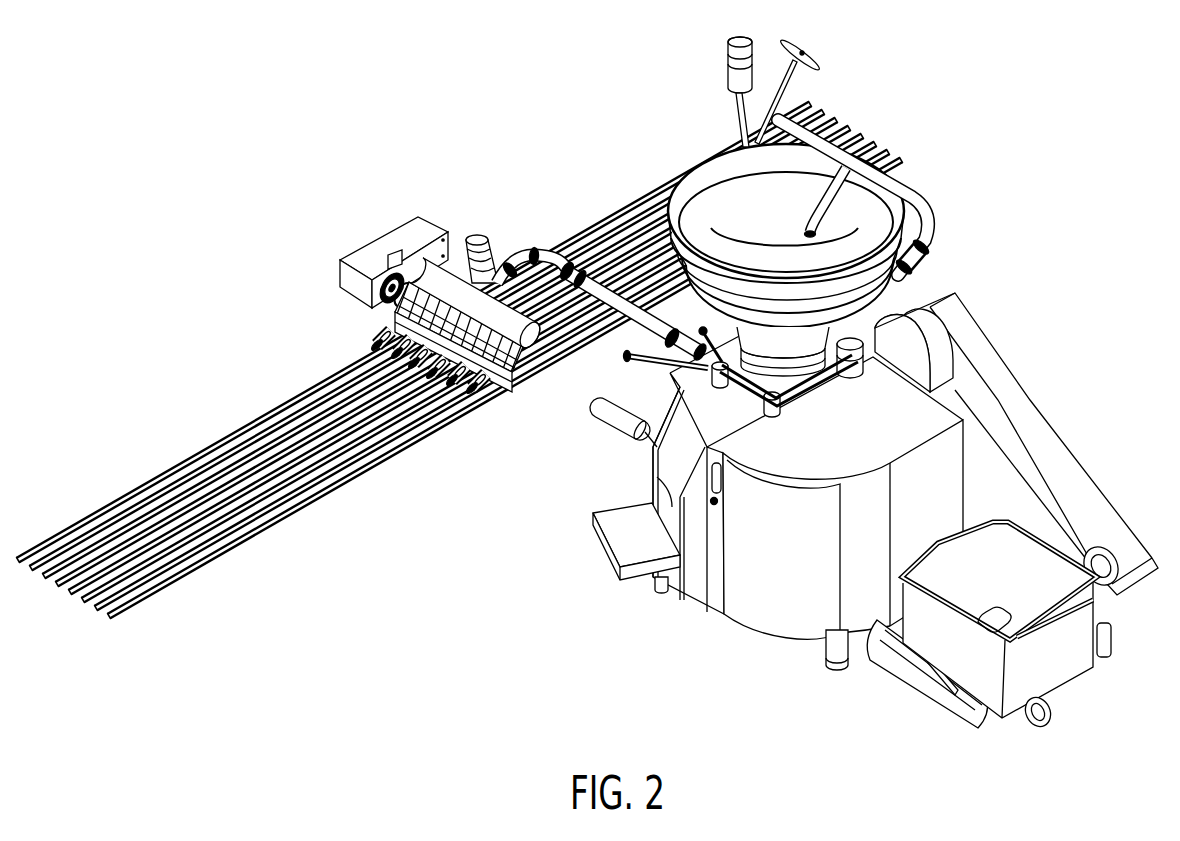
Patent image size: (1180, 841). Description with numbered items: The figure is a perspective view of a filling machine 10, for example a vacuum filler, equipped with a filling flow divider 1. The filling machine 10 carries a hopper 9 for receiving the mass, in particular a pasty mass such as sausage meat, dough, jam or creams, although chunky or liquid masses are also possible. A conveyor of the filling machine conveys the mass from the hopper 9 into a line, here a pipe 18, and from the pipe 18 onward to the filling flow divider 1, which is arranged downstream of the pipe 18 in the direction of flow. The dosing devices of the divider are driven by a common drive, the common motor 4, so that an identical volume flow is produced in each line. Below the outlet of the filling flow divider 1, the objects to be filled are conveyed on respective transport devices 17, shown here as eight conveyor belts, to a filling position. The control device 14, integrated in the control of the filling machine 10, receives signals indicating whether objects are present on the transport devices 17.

The filling flow divider 1 is at (448, 280).
The common motor 4 is at (370, 250).
The hopper 9 is at (718, 170).
The filling machine 10 is at (927, 158).
The control device 14 is at (652, 480).
The transport devices 17 is at (610, 218).
The pipe 18 is at (635, 330).